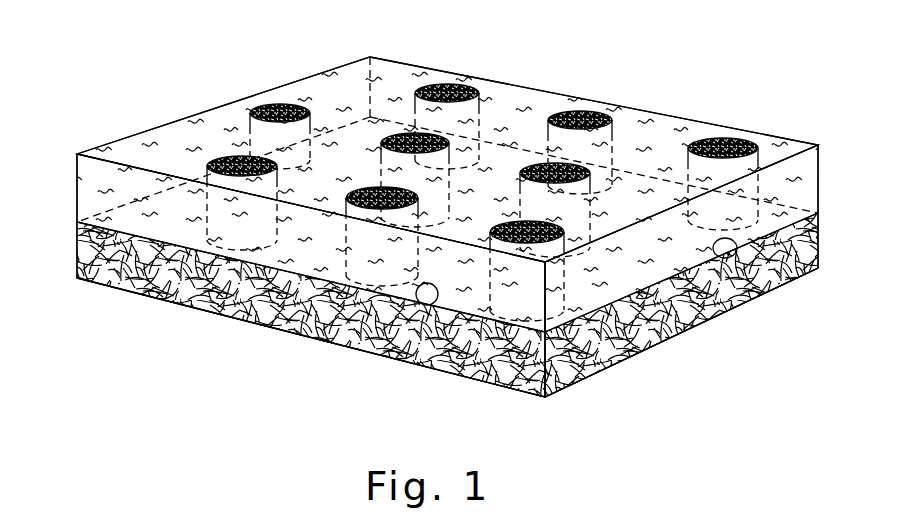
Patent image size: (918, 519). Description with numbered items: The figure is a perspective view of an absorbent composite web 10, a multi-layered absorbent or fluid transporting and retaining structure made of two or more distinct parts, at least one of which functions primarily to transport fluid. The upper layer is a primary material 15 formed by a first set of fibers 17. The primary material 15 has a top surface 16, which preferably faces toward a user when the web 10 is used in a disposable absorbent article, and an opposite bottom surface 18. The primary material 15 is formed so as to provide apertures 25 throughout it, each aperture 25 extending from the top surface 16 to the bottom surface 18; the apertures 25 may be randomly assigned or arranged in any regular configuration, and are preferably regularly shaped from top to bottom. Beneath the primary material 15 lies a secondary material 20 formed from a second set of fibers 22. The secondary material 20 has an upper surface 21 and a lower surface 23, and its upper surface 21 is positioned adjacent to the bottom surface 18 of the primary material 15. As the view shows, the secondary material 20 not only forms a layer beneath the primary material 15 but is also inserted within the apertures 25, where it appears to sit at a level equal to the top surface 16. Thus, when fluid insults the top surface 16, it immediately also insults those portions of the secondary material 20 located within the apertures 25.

The absorbent composite web 10 is at (747, 58).
The primary material 15 is at (152, 140).
The top surface 16 is at (523, 95).
The first set of fibers 17 is at (110, 213).
The bottom surface 18 is at (818, 240).
The secondary material 20 is at (248, 318).
The upper surface 21 is at (410, 293).
The second set of fibers 22 is at (267, 102).
The lower surface 23 is at (152, 297).
The apertures 25 is at (277, 103).